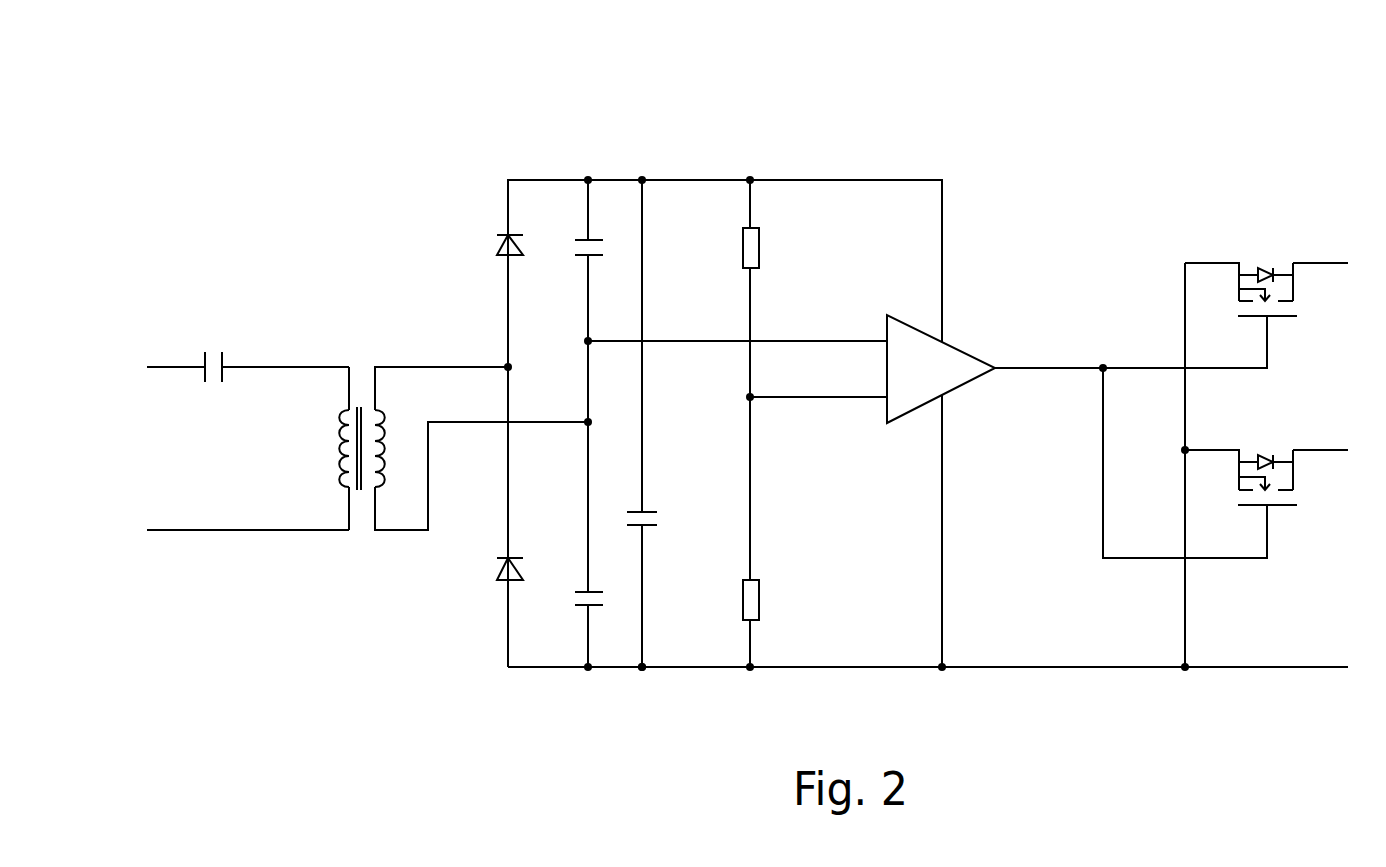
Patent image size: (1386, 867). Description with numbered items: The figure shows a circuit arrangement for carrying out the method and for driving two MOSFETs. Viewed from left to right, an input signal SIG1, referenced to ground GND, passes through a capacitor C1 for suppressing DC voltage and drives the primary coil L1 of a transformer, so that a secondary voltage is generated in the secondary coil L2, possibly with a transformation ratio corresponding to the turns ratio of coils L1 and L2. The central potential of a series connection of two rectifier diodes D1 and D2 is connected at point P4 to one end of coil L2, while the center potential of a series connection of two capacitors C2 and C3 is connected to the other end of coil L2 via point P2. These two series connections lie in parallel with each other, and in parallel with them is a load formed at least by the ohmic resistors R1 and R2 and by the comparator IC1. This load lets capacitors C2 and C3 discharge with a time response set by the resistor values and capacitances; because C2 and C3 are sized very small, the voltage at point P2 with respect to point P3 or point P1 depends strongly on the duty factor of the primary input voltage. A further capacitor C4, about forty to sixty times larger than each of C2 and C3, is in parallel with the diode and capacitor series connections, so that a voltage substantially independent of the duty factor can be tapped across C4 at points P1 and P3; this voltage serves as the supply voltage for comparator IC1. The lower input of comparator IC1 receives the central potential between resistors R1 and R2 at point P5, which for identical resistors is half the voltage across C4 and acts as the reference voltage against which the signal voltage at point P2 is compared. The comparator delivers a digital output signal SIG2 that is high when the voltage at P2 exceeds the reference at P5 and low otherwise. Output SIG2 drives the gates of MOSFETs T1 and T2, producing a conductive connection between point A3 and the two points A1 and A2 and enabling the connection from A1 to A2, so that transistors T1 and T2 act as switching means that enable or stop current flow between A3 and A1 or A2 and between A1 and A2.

The input signal terminal SIG1 is at (141, 369).
The ground terminal GND is at (215, 531).
The capacitor C1 is at (273, 354).
The primary coil L1 is at (332, 448).
The secondary coil L2 is at (396, 448).
The diode D1 is at (493, 249).
The diode D2 is at (494, 571).
The capacitor C2 is at (576, 248).
The capacitor C3 is at (576, 598).
The capacitor C4 is at (631, 517).
The ohmic resistor R1 is at (738, 248).
The ohmic resistor R2 is at (739, 600).
The comparator IC1 is at (941, 369).
The output signal SIG2 is at (1070, 354).
The MOSFET T1 is at (1241, 269).
The MOSFET T2 is at (1241, 456).
The point P1 is at (605, 165).
The point P2 is at (571, 408).
The point P3 is at (660, 653).
The point P4 is at (491, 353).
The point P5 is at (768, 413).
The point A1 is at (1339, 264).
The point A2 is at (1339, 454).
The point A3 is at (1285, 670).